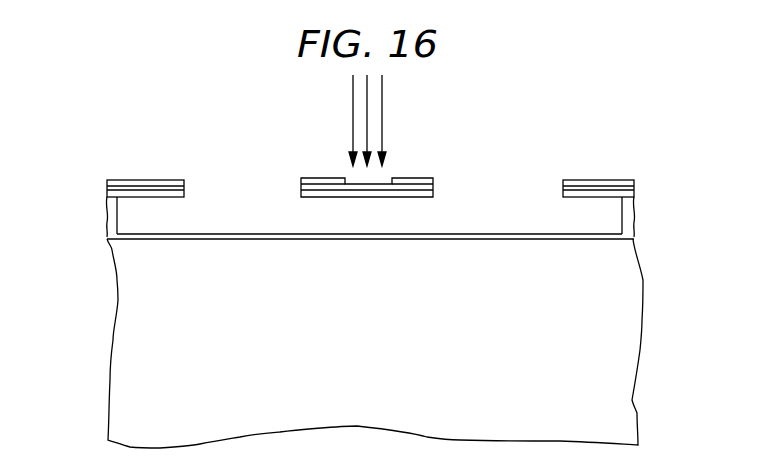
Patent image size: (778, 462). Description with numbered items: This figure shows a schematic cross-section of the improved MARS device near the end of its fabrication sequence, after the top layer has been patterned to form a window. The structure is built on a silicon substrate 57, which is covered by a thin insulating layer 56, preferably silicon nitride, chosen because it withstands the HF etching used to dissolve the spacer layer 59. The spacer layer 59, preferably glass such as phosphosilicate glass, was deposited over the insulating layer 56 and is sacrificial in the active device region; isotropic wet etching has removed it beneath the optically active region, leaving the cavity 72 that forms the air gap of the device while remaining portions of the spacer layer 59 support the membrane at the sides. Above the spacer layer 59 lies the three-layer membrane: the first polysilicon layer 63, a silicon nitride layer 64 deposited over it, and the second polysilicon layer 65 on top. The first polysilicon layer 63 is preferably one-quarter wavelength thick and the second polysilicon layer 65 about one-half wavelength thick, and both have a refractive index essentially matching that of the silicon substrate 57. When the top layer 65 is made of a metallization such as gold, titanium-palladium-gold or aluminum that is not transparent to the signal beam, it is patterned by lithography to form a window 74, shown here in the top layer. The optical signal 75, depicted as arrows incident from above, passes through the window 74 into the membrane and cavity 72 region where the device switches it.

The insulating layer 56 is at (634, 235).
The silicon substrate 57 is at (633, 306).
The spacer layer 59 is at (108, 228).
The first polysilicon layer 63 is at (635, 192).
The silicon nitride layer 64 is at (107, 188).
The second polysilicon layer 65 is at (635, 181).
The cavity 72 is at (477, 228).
The window 74 is at (361, 180).
The optical signal 75 is at (383, 125).